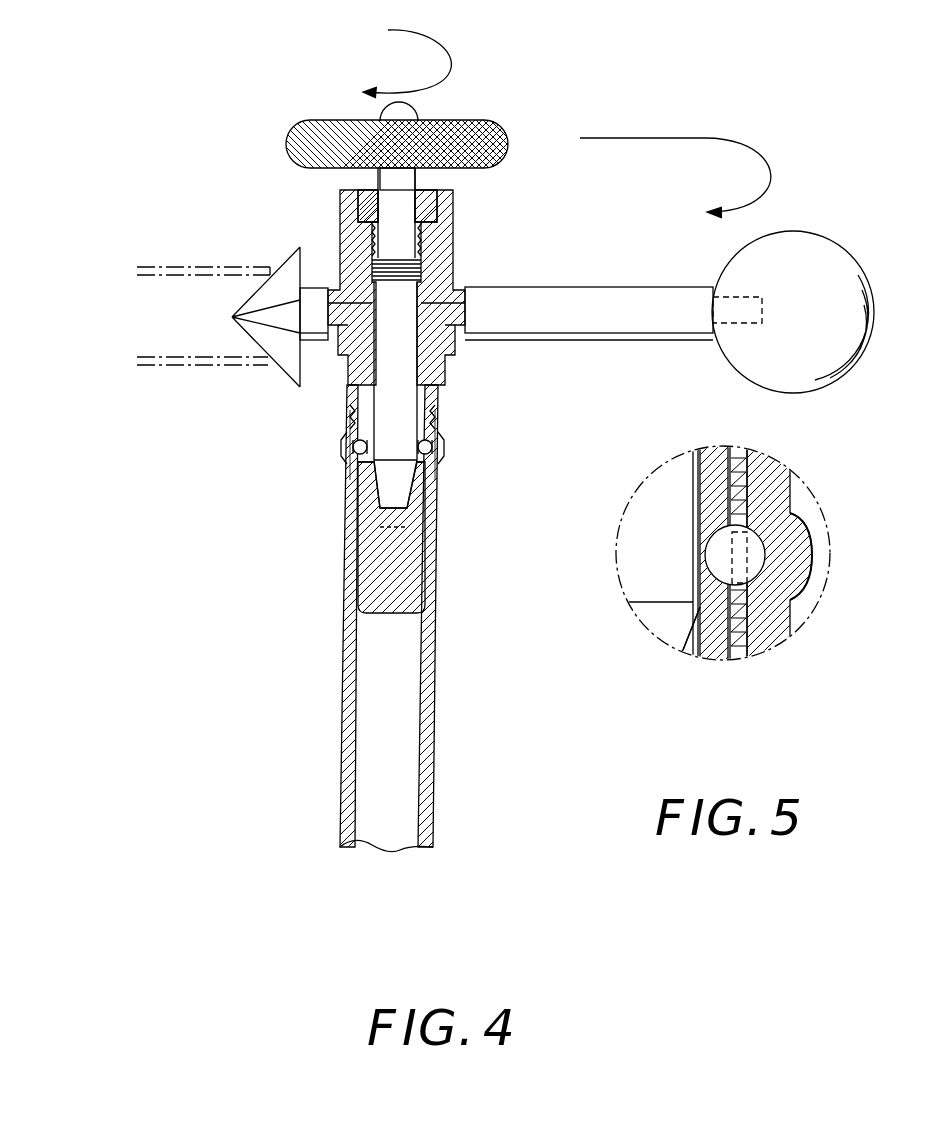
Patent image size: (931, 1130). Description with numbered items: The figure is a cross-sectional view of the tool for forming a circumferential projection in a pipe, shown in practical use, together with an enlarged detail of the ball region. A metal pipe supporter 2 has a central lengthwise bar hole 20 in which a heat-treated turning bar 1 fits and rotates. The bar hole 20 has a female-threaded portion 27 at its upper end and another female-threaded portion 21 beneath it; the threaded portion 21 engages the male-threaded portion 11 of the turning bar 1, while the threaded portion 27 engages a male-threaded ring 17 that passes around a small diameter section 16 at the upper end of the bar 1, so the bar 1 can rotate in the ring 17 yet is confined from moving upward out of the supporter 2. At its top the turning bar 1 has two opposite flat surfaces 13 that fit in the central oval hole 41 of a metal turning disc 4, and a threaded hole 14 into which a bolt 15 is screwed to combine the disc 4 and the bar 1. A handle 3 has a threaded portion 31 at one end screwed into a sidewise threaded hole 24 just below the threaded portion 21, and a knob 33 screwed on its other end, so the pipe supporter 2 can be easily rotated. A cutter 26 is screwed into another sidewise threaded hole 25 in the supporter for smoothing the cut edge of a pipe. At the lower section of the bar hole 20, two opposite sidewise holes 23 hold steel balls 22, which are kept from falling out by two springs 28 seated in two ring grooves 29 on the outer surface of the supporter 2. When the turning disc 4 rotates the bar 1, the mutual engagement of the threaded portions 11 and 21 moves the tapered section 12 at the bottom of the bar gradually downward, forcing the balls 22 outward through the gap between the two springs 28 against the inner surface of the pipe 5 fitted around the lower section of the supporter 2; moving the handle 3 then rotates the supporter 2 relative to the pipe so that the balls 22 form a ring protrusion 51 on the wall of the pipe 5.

In FIG. 4, the turning bar 1 is at (454, 404).
In FIG. 5, the turning bar 1 is at (643, 580).
In FIG. 4, the pipe supporter 2 is at (407, 587).
In FIG. 5, the pipe supporter 2 is at (717, 650).
In FIG. 4, the handle 3 is at (630, 320).
In FIG. 4, the turning disc 4 is at (507, 127).
In FIG. 4, the pipe 5 is at (180, 287).
In FIG. 5, the pipe 5 is at (780, 620).
In FIG. 4, the threaded portion 11 is at (425, 270).
In FIG. 4, the tapered section 12 is at (360, 505).
In FIG. 5, the tapered section 12 is at (663, 630).
In FIG. 4, the flat surfaces 13 is at (461, 125).
In FIG. 4, the threaded hole 14 is at (413, 120).
In FIG. 4, the bolt 15 is at (455, 72).
In FIG. 4, the small diameter section 16 is at (405, 183).
In FIG. 4, the male-threaded ring 17 is at (432, 207).
In FIG. 4, the bar hole 20 is at (403, 388).
In FIG. 5, the bar hole 20 is at (618, 555).
In FIG. 4, the threaded portion 21 is at (440, 237).
In FIG. 4, the steel balls 22 is at (386, 470).
In FIG. 5, the steel balls 22 is at (803, 536).
In FIG. 4, the sidewise holes 23 is at (350, 458).
In FIG. 5, the sidewise holes 23 is at (763, 548).
In FIG. 4, the sidewise threaded hole 24 is at (467, 317).
In FIG. 4, the sidewise threaded hole 25 is at (337, 300).
In FIG. 4, the cutter 26 is at (268, 303).
In FIG. 4, the female-threaded portion 27 is at (459, 206).
In FIG. 4, the springs 28 is at (380, 467).
In FIG. 5, the springs 28 is at (747, 482).
In FIG. 4, the ring grooves 29 is at (350, 420).
In FIG. 5, the ring grooves 29 is at (799, 581).
In FIG. 4, the threaded portion 31 is at (614, 287).
In FIG. 4, the knob 33 is at (797, 252).
In FIG. 4, the oval hole 41 is at (440, 130).
In FIG. 4, the ring protrusion 51 is at (343, 442).
In FIG. 5, the ring protrusion 51 is at (807, 573).